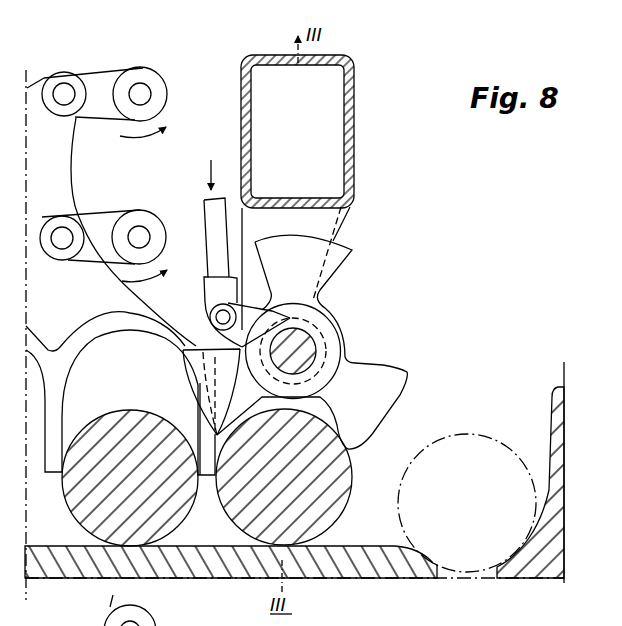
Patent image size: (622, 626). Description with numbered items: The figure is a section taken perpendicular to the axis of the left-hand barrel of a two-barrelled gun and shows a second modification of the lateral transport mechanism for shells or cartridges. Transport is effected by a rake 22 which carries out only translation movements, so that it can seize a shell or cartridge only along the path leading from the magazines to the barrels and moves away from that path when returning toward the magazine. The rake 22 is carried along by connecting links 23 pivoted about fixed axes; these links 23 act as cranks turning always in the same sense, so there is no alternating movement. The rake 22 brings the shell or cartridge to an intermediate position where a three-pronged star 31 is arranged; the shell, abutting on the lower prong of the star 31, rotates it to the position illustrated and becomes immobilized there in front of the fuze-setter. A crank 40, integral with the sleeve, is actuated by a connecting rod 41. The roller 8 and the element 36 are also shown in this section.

The roller 8 is at (342, 466).
The rake 22 is at (129, 300).
The connecting link 23 is at (107, 76).
The three-pronged star 31 is at (401, 389).
The roller 36 is at (483, 578).
The crank 40 is at (215, 343).
The connecting rod 41 is at (211, 219).